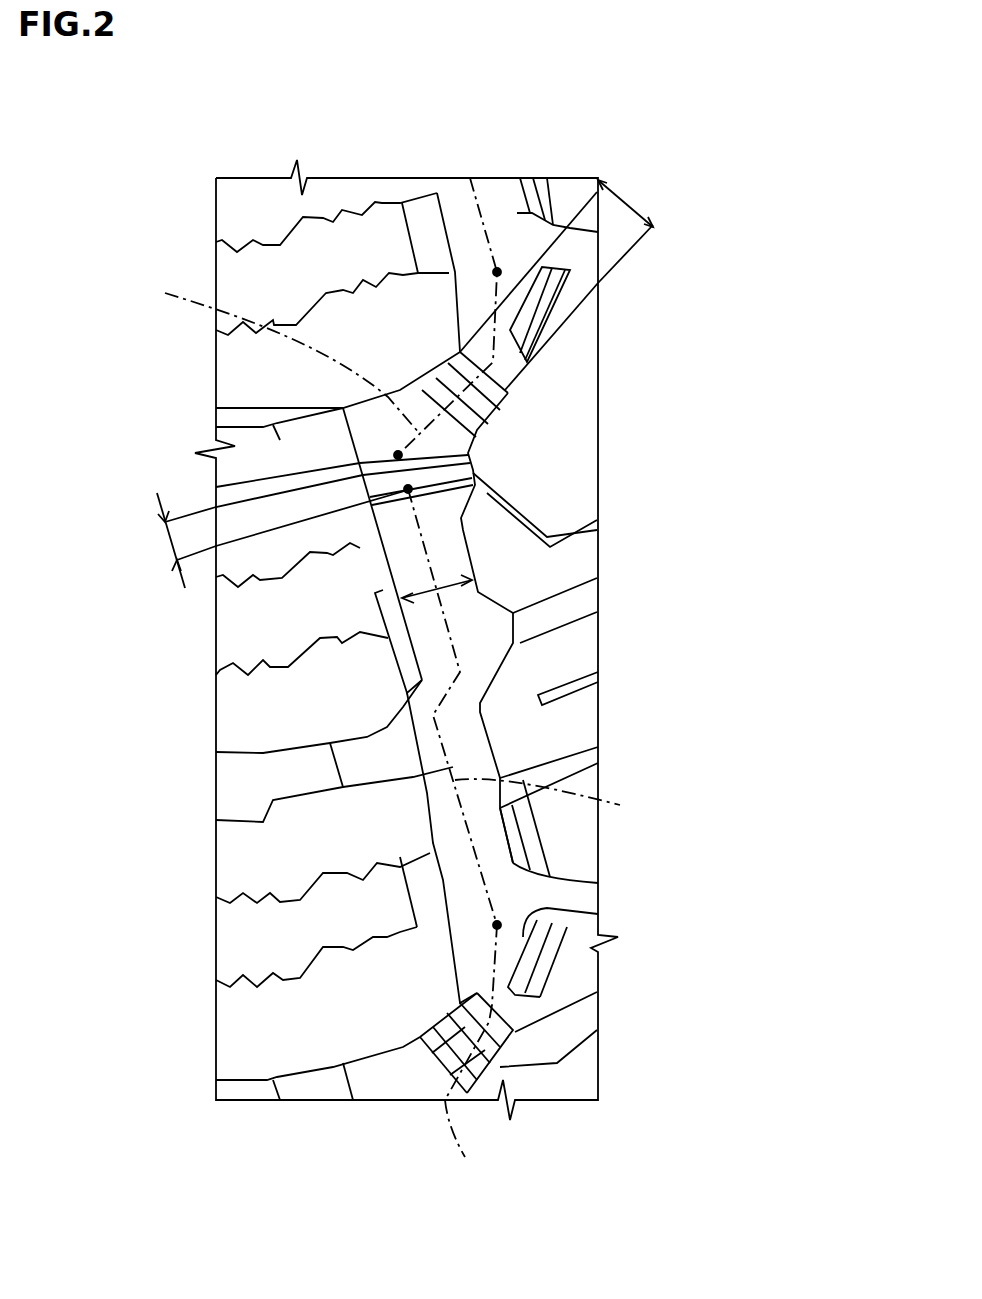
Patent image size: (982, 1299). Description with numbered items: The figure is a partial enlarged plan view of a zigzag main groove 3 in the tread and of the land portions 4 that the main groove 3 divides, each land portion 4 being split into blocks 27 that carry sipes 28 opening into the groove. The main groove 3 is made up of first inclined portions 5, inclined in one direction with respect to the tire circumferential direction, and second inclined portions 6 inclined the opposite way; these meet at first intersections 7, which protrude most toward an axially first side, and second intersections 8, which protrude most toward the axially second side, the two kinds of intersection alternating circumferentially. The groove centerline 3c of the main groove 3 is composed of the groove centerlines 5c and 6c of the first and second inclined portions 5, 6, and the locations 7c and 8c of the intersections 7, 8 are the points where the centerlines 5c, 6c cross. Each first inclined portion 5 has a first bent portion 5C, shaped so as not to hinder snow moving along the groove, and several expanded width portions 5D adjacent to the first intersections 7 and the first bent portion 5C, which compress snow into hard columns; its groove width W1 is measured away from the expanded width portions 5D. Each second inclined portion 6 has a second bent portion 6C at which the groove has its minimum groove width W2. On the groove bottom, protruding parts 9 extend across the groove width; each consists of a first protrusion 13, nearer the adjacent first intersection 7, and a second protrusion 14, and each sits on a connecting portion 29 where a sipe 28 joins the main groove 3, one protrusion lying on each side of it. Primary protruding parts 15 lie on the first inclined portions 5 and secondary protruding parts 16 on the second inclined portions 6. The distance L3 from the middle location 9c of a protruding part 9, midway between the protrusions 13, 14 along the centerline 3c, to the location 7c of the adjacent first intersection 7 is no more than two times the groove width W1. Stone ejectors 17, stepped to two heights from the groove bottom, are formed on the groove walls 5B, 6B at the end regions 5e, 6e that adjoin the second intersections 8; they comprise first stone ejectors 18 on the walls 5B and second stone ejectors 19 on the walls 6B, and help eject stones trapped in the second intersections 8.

The main groove 3 is at (497, 205).
The groove centerline of the main groove 3c is at (402, 684).
The land portions 4 is at (641, 423).
The blocks 27 is at (565, 440).
The first inclined portions 5 is at (420, 740).
The groove walls of the first inclined portions 5B is at (482, 727).
The first bent portion 5C is at (470, 686).
The expanded width portions 5D is at (465, 507).
The groove centerline of the first inclined portion 5c is at (620, 805).
The one end regions of the first inclined portions 5e is at (497, 835).
The second inclined portions 6 is at (508, 380).
The groove walls of the second inclined portions 6B is at (510, 1027).
The second bent portion 6C is at (598, 283).
The groove centerline of the second inclined portion 6c is at (288, 684).
The one end regions of the second inclined portions 6e is at (510, 962).
The first intersections 7 is at (383, 434).
The locations of the first intersections 7c is at (216, 408).
The second intersections 8 is at (503, 260).
The locations of the second intersections 8c is at (497, 272).
The protruding part 9 is at (467, 364).
The middle location of the protruding part 9c is at (470, 478).
The first protrusion 13 is at (435, 397).
The second protrusion 14 is at (444, 264).
The primary protruding parts 15 is at (462, 468).
The secondary protruding parts 16 is at (405, 236).
The stone ejectors 17 is at (625, 862).
The first stone ejectors 18 is at (598, 883).
The second stone ejectors 19 is at (598, 915).
The sipes 28 is at (530, 360).
The connecting portion 29 is at (437, 397).
The groove width of the first inclined portions W1 is at (435, 592).
The minimum groove width W2 is at (637, 229).
The distance between the protruding part and the adjacent first intersection L3 is at (267, 525).